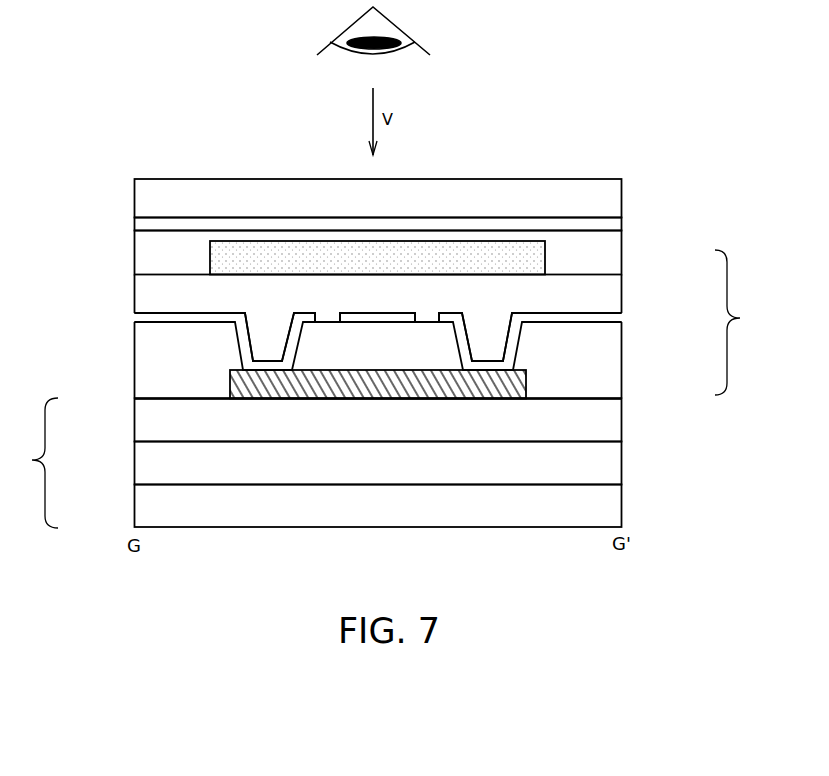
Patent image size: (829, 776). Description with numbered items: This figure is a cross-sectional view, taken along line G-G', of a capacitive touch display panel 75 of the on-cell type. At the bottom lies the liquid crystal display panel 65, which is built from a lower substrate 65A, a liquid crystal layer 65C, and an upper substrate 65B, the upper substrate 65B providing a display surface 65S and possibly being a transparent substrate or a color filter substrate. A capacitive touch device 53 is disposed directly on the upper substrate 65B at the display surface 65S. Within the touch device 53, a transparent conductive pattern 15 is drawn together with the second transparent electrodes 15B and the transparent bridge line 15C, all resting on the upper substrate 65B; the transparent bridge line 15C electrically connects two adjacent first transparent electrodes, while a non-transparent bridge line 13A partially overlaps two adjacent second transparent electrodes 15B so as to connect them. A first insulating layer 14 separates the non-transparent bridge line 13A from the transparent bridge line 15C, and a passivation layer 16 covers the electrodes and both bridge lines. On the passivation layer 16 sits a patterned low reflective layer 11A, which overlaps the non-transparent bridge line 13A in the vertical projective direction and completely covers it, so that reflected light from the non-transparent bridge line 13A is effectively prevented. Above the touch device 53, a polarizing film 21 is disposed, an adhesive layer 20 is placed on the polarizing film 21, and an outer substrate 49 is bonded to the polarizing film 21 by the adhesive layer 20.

The capacitive touch display panel 75 is at (611, 96).
The outer substrate 49 is at (610, 197).
The adhesive layer 20 is at (610, 222).
The polarizing film 21 is at (618, 238).
The patterned low reflective layer 11A is at (537, 255).
The passivation layer 16 is at (620, 303).
The thin film transistor 15 is at (379, 322).
The second transparent electrodes 15B is at (618, 316).
The transparent bridge line 15C is at (397, 317).
The first insulating layer 14 is at (607, 362).
The non-transparent bridge line 13A is at (520, 383).
The capacitive touch device 53 is at (742, 322).
The display surface 65S is at (578, 399).
The upper substrate 65B is at (613, 418).
The liquid crystal layer 65C is at (613, 456).
The lower substrate 65A is at (613, 503).
The liquid crystal display panel 65 is at (29, 463).